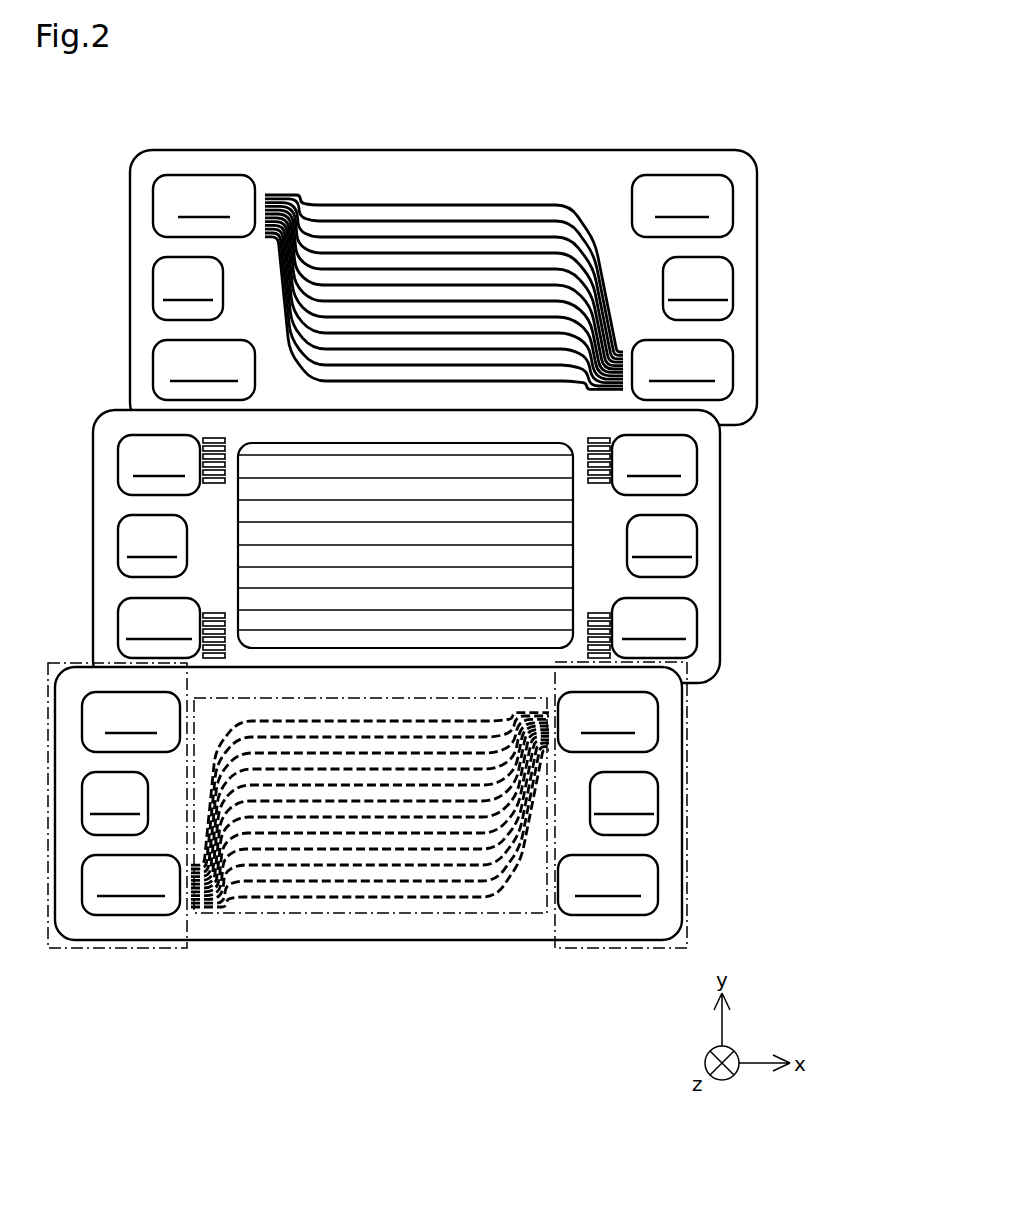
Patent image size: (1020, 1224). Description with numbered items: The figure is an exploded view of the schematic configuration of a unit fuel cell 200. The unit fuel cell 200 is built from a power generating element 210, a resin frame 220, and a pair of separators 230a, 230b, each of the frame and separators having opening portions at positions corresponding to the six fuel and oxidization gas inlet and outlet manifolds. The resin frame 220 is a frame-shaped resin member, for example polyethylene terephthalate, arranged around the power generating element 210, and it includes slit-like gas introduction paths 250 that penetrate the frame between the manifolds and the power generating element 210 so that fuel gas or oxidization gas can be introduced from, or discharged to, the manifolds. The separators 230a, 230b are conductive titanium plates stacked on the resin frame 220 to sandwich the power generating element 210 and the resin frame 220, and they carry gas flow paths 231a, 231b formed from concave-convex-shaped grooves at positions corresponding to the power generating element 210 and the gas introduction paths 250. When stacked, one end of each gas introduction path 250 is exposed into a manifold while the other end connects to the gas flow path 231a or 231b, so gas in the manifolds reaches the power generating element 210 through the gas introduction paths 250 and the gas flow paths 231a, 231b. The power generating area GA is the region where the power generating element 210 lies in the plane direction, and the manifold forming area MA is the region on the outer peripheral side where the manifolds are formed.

The unit fuel cell 200 is at (738, 134).
The separator 230b is at (577, 150).
The gas flow path 231b is at (471, 171).
The resin frame 220 is at (720, 545).
The power generating element 210 is at (466, 466).
The gas introduction path 250 is at (212, 437).
The separator 230a is at (537, 940).
The gas flow path 231a is at (342, 920).
The power generating area GA is at (418, 915).
The manifold forming area MA is at (118, 948).